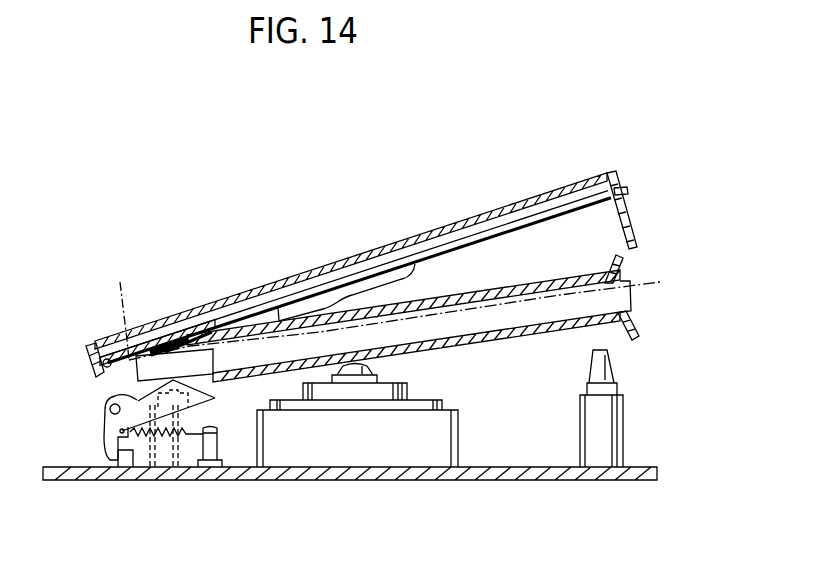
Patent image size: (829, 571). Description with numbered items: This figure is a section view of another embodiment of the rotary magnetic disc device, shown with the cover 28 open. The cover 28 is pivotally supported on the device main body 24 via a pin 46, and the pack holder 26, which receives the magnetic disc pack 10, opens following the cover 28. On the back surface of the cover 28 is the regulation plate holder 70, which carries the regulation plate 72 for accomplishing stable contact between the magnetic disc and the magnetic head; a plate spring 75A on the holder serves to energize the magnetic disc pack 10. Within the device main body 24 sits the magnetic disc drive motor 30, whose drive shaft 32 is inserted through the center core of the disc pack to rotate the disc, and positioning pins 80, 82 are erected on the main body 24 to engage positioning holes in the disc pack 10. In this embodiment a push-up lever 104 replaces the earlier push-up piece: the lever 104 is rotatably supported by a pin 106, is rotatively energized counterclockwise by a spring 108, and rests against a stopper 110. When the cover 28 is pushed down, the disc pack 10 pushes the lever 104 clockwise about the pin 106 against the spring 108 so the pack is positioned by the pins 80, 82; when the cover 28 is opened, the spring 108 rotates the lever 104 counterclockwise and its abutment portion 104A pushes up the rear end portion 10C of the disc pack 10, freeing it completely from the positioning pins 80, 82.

The magnetic disc pack 10 is at (662, 283).
The rear end portion of the magnetic disc pack 10C is at (120, 307).
The device main body 24 is at (365, 481).
The pack holder 26 is at (548, 282).
The cover 28 is at (477, 212).
The magnetic disc drive motor 30 is at (446, 440).
The drive shaft 32 is at (377, 372).
The pin 46 is at (101, 345).
The regulation plate holder 70 is at (461, 248).
The regulation plate 72 is at (358, 283).
The plate spring 75A is at (168, 346).
The positioning pin 80 is at (200, 402).
The positioning pin 82 is at (618, 376).
The push-up lever 104 is at (118, 431).
The abutment portion 104A is at (197, 388).
The pin 106 is at (103, 405).
The spring 108 is at (165, 438).
The stopper 110 is at (125, 468).